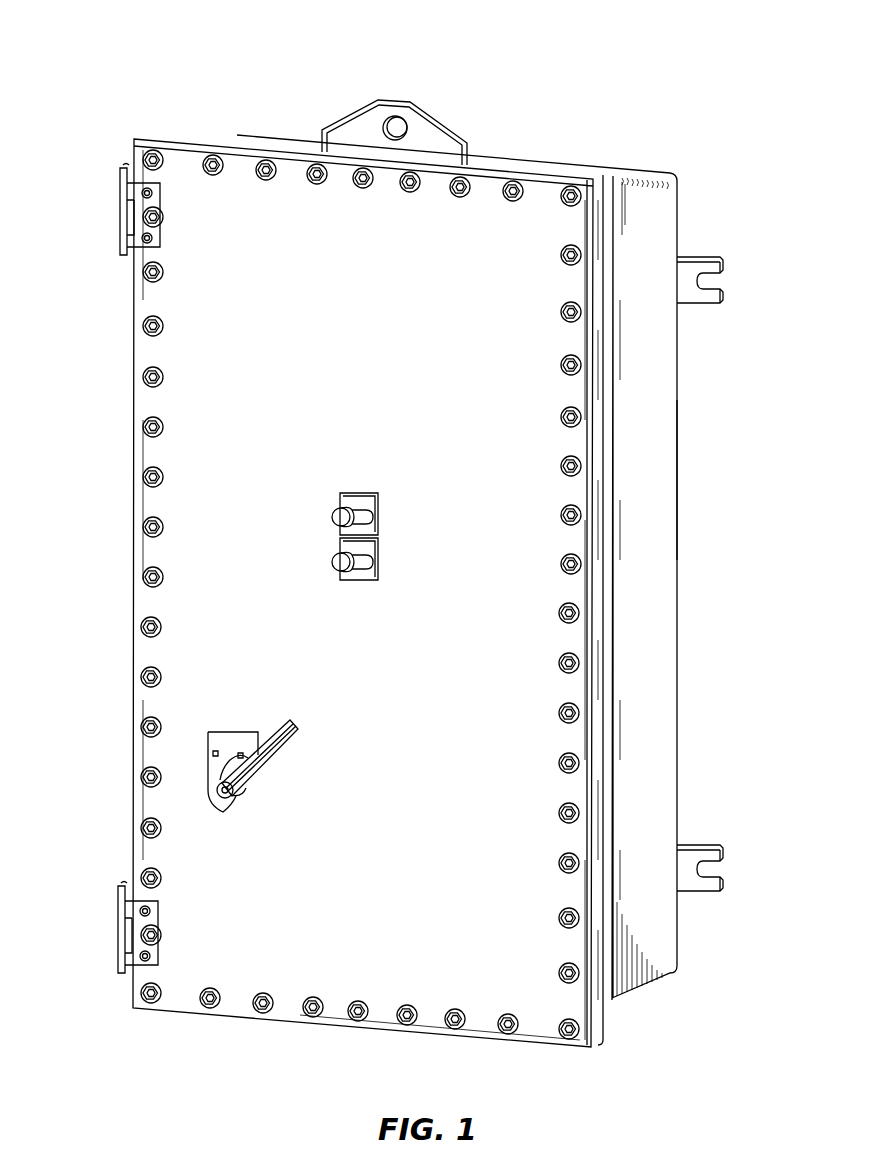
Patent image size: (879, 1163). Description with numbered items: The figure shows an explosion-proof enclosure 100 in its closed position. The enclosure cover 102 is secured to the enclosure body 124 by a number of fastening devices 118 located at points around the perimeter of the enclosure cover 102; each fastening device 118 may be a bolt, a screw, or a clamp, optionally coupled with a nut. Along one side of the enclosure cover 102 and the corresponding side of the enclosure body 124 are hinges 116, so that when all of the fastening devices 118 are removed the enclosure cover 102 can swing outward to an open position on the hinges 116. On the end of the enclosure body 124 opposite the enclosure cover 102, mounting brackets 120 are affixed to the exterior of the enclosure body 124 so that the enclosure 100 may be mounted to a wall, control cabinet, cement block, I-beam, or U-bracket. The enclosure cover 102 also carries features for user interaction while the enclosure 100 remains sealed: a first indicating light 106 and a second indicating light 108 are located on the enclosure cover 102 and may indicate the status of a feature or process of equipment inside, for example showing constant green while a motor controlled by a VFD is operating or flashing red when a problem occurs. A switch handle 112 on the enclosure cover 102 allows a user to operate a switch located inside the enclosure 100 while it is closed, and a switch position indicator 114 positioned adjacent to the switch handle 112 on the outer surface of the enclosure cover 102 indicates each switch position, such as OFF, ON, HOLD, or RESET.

The explosion-proof enclosure 100 is at (720, 56).
The enclosure cover 102 is at (366, 928).
The indicating light 1 106 is at (334, 515).
The indicating light 2 108 is at (334, 560).
The switch handle 112 is at (282, 758).
The switch position indicator 114 is at (228, 740).
The hinge 116 is at (118, 212).
The fastening device 118 is at (141, 526).
The mounting bracket 120 is at (698, 303).
The enclosure body 124 is at (677, 575).